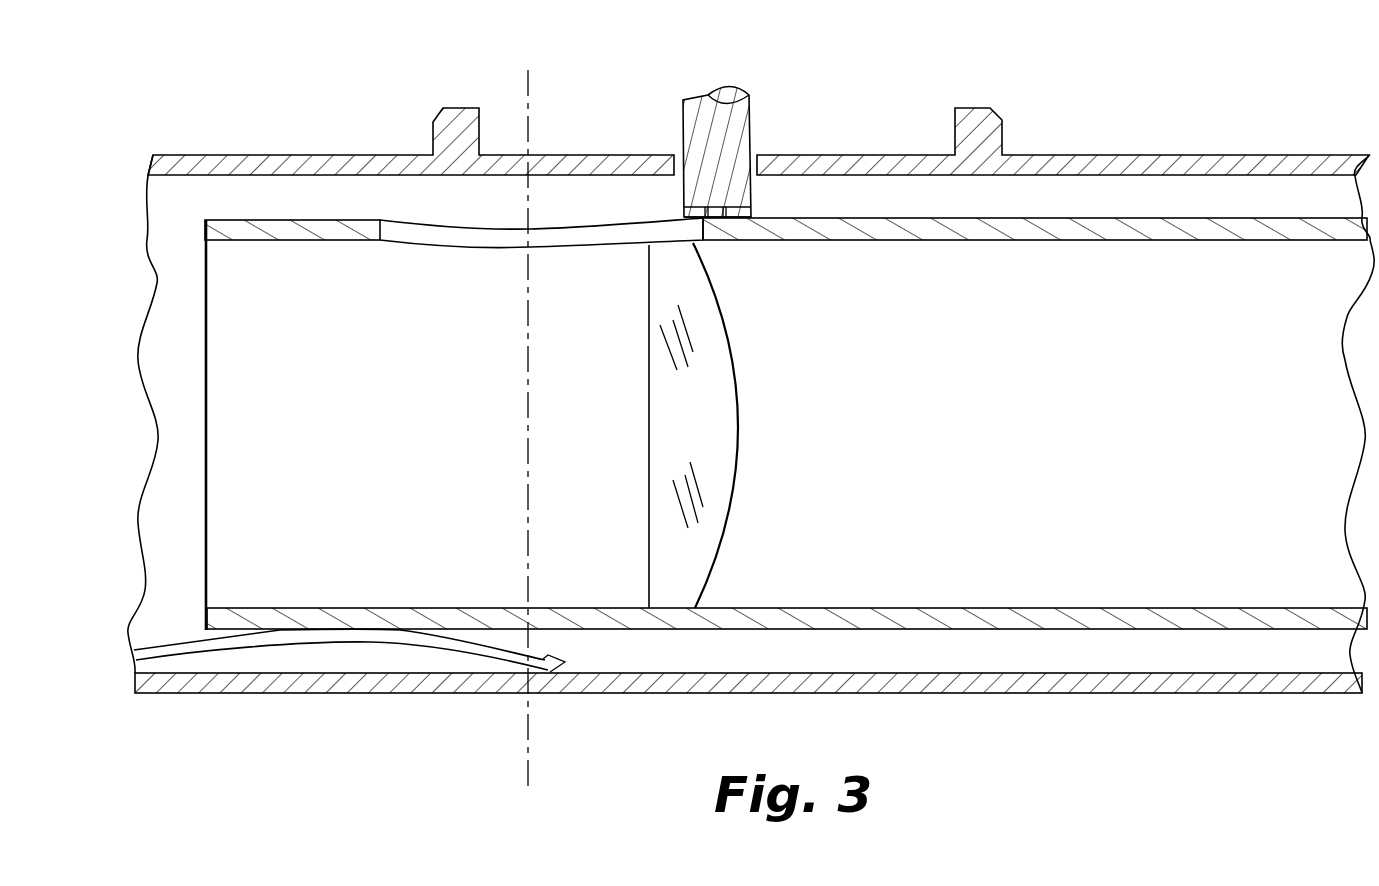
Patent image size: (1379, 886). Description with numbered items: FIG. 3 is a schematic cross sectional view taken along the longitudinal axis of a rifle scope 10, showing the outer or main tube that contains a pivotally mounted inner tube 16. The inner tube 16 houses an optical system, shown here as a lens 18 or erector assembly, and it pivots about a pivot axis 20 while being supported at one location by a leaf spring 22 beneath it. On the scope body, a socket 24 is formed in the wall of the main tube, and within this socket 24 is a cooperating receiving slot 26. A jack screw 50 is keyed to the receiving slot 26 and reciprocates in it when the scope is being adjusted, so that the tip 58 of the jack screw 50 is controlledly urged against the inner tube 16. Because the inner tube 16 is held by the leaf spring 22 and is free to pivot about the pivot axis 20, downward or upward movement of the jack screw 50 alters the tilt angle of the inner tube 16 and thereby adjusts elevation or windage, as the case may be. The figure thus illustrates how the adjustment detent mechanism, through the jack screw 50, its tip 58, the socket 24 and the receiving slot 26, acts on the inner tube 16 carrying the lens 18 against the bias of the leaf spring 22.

The optical assembly housing 10 is at (1232, 142).
The inner tube 16 is at (1182, 240).
The lens 18 is at (740, 425).
The pivot axis 20 is at (529, 320).
The leaf spring 22 is at (560, 662).
The socket 24 is at (587, 130).
The receiving slot 26 is at (757, 150).
The jack screw 50 is at (750, 112).
The tip 58 is at (753, 212).